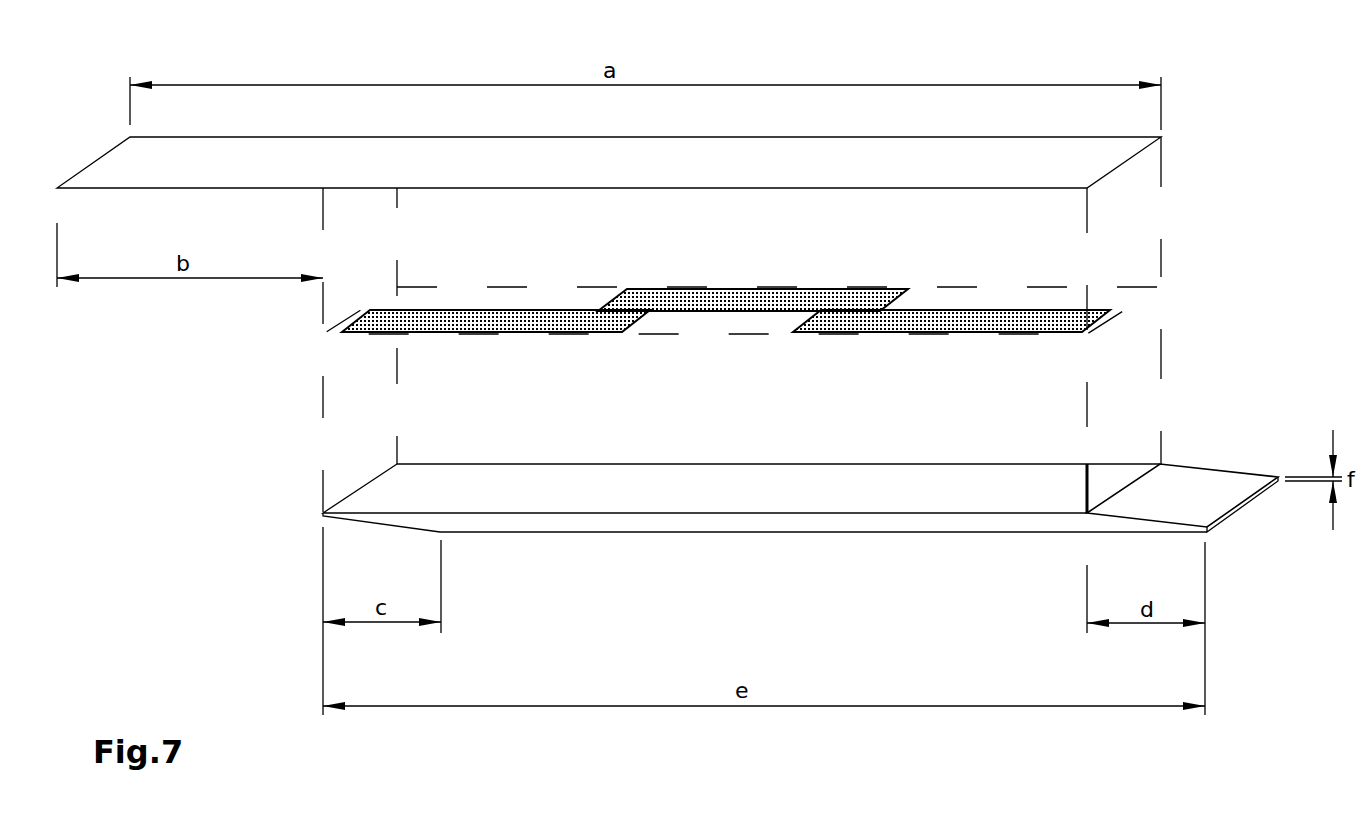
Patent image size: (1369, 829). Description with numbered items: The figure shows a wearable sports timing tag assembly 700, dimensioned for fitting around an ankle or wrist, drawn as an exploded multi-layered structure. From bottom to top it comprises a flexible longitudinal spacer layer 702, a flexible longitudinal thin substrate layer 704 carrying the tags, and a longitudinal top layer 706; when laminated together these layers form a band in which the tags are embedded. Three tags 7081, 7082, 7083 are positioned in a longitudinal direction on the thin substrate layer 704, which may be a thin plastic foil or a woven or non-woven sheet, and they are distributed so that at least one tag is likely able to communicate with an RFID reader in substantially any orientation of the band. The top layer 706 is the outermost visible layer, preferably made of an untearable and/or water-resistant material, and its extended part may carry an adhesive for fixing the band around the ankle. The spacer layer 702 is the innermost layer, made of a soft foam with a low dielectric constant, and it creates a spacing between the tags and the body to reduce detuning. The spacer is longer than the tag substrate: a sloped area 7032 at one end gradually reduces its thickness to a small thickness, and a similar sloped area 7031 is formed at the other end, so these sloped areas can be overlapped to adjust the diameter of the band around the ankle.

The light guide arrangement 700 is at (741, 803).
The flexible longitudinal spacer layer 702 is at (765, 471).
The sloped area of length c 7031 is at (368, 525).
The sloped area of length d 7032 is at (1182, 472).
The flexible longitudinal thin substrate layer 704 is at (742, 287).
The longitudinal top layer 706 is at (602, 143).
The first tag 7081 is at (492, 319).
The second tag 7082 is at (738, 300).
The third tag 7083 is at (932, 323).